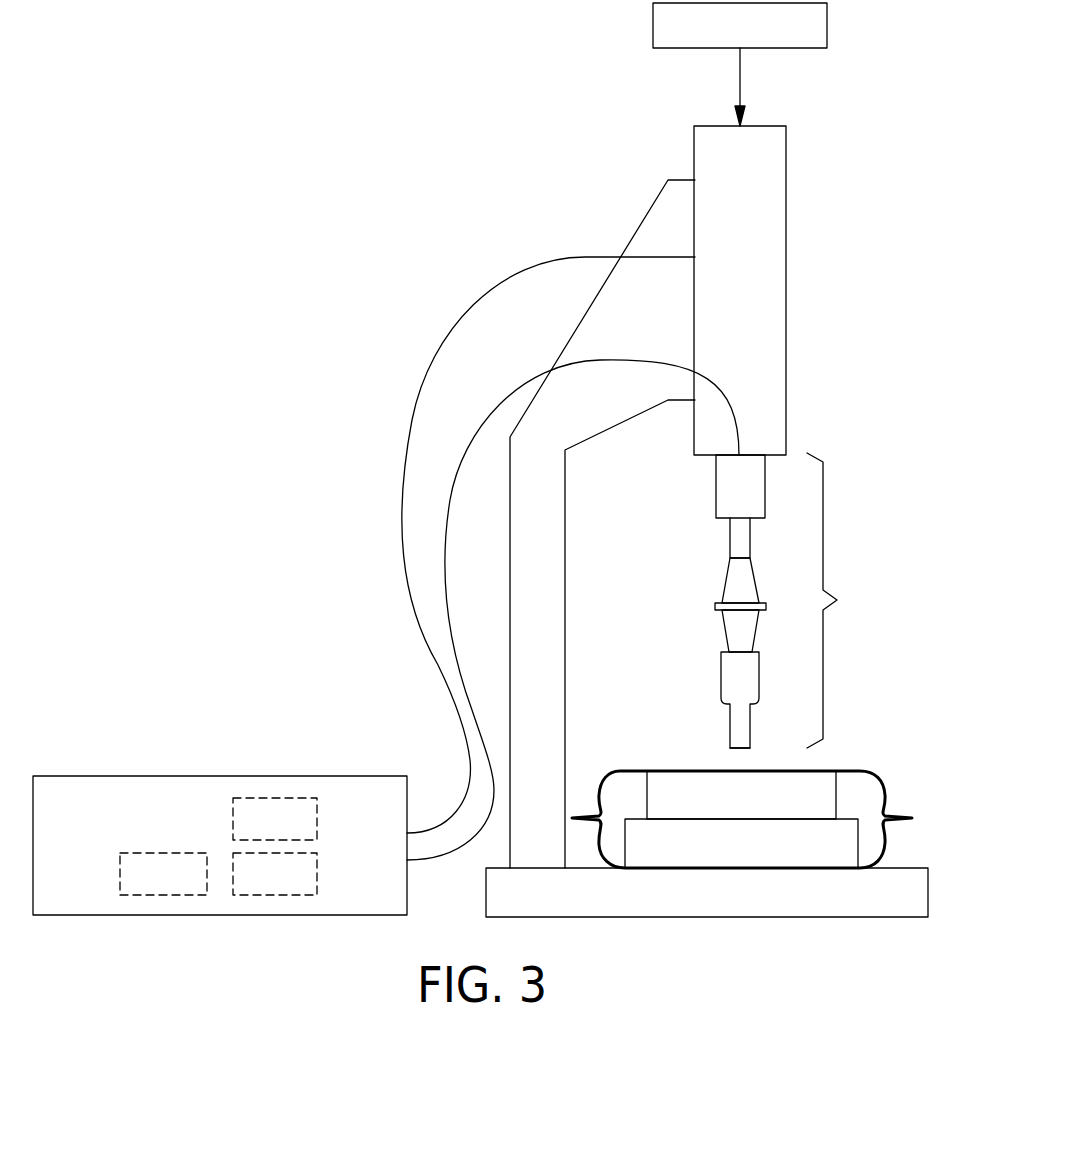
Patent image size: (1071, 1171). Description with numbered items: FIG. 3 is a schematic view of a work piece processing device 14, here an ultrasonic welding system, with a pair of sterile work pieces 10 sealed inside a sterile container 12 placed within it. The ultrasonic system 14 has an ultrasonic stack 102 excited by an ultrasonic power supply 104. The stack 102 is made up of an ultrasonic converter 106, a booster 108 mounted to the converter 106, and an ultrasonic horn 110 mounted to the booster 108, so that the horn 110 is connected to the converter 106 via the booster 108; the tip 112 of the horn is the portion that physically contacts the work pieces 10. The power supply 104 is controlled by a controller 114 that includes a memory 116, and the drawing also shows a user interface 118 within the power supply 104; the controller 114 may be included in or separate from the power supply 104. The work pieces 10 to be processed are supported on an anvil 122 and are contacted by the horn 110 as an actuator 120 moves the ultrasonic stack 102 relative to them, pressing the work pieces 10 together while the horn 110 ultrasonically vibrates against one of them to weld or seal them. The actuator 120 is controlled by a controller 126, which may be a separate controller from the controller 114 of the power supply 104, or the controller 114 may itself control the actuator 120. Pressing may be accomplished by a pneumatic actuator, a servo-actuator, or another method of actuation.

The work piece 10 is at (825, 797).
The container 12 is at (847, 771).
The work piece processing device 14 is at (346, 254).
The ultrasonic stack 102 is at (760, 608).
The ultrasonic power supply 104 is at (162, 776).
The ultrasonic converter 106 is at (716, 483).
The booster 108 is at (727, 580).
The ultrasonic horn 110 is at (721, 676).
The horn tip 112 is at (737, 750).
The controller 114 is at (275, 798).
The memory 116 is at (275, 895).
The user interface 118 is at (163, 895).
The actuator 120 is at (786, 290).
The anvil 122 is at (707, 917).
The controller 126 is at (653, 26).